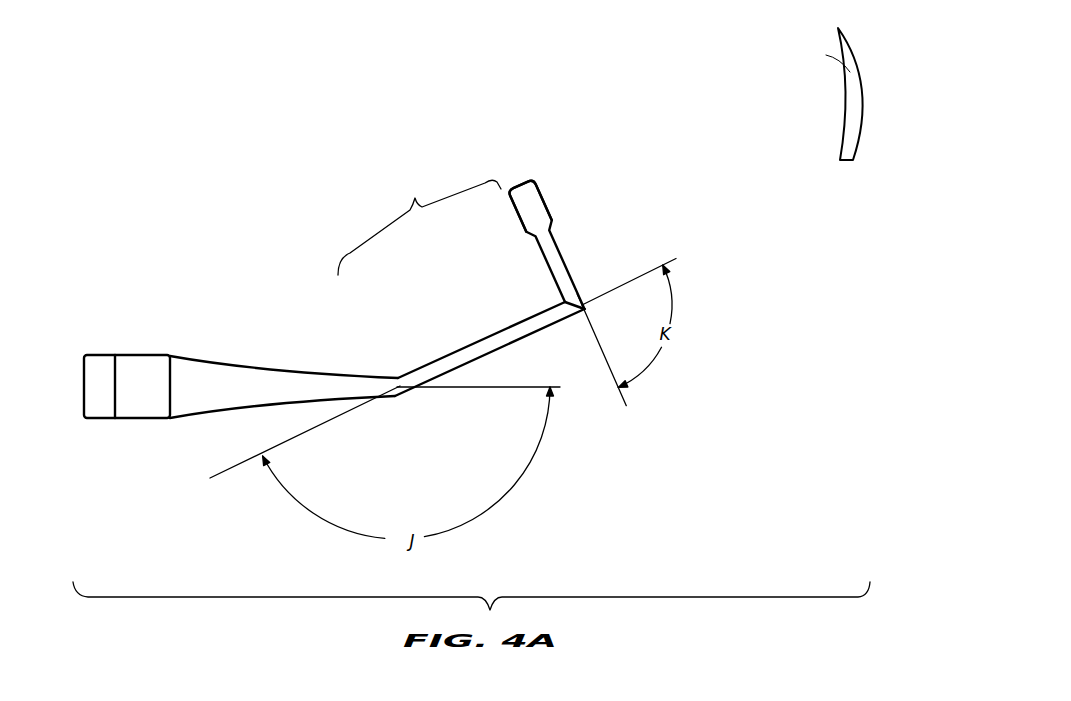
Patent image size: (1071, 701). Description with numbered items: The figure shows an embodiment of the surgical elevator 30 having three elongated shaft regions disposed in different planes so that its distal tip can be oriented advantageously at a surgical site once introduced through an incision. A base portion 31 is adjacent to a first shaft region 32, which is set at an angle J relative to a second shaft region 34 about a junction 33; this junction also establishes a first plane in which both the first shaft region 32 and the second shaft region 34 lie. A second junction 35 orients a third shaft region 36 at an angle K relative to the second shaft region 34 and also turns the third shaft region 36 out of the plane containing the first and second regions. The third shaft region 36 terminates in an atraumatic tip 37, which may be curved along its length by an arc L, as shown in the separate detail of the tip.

The wrench assembly 30 is at (419, 224).
The base portion 31 is at (102, 405).
The first shaft region 32 is at (200, 373).
The junction 33 is at (399, 392).
The second shaft region 34 is at (513, 333).
The junction 35 is at (585, 309).
The third shaft region 36 is at (555, 247).
The atraumatic tip 37 is at (523, 179).